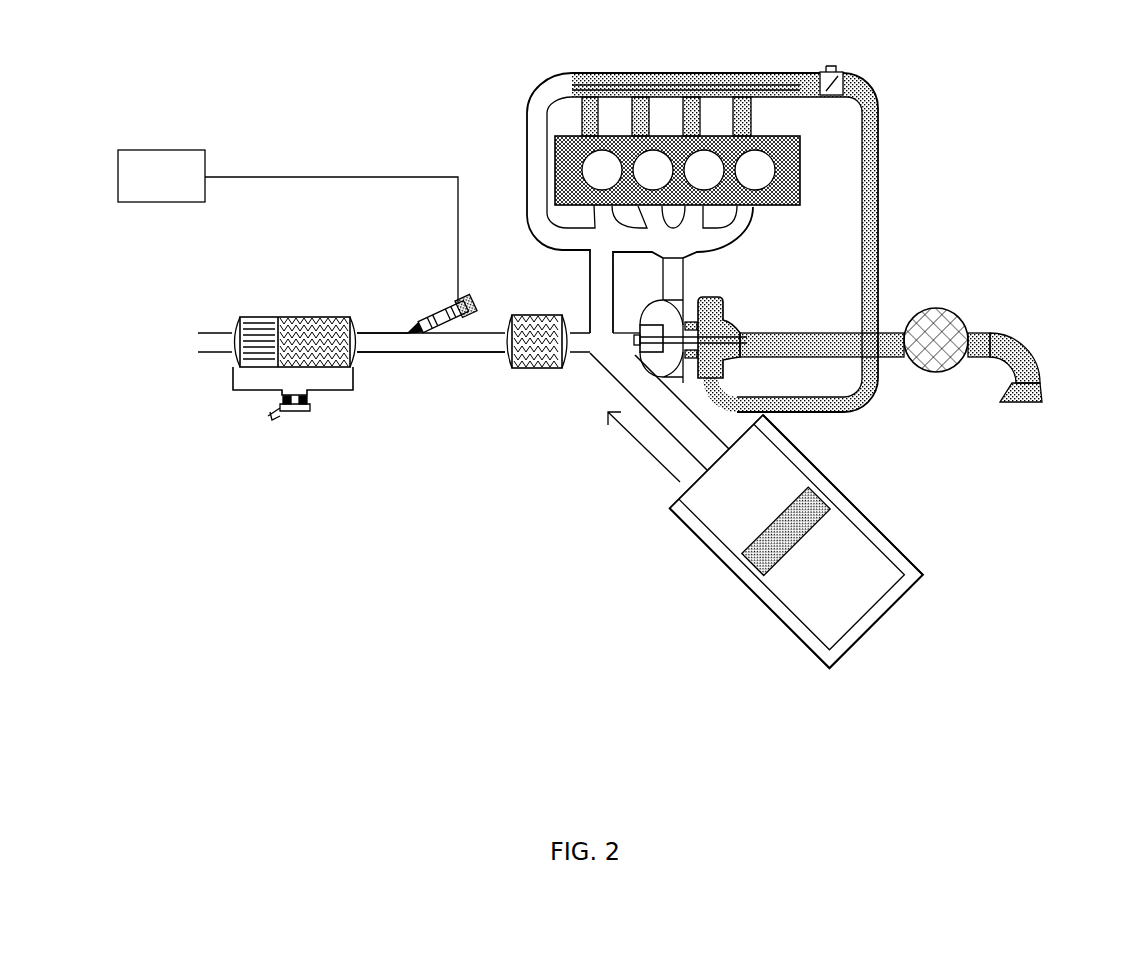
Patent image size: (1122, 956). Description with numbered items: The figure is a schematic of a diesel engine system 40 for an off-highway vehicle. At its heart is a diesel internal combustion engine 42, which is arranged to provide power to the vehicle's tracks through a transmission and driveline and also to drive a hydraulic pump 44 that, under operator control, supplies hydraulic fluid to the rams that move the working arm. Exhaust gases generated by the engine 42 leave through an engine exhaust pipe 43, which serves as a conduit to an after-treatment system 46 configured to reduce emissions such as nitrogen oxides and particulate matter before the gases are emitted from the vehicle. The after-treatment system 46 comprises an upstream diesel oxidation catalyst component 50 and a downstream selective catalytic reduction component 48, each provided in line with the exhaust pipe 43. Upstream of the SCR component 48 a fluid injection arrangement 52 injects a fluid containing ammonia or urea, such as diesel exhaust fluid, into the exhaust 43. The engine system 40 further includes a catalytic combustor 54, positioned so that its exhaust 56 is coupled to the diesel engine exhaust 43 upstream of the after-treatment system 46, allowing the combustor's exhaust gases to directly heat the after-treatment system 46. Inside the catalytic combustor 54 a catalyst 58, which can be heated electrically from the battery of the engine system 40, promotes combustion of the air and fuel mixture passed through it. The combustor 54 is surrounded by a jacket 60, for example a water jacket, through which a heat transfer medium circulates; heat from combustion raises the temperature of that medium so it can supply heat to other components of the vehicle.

The engine system 40 is at (334, 100).
The diesel internal combustion engine 42 is at (531, 93).
The engine exhaust pipe 43 is at (393, 333).
The hydraulic pump 44 is at (175, 150).
The after-treatment system 46 is at (415, 440).
The selective catalytic reduction (SCR) component 48 is at (258, 380).
The diesel oxidation catalyst (DOC) component 50 is at (548, 368).
The fluid injection arrangement 52 is at (465, 302).
The catalytic combustor 54 is at (845, 571).
The exhaust of the catalytic combustor 56 is at (607, 405).
The catalyst 58 is at (780, 540).
The jacket 60 is at (913, 560).